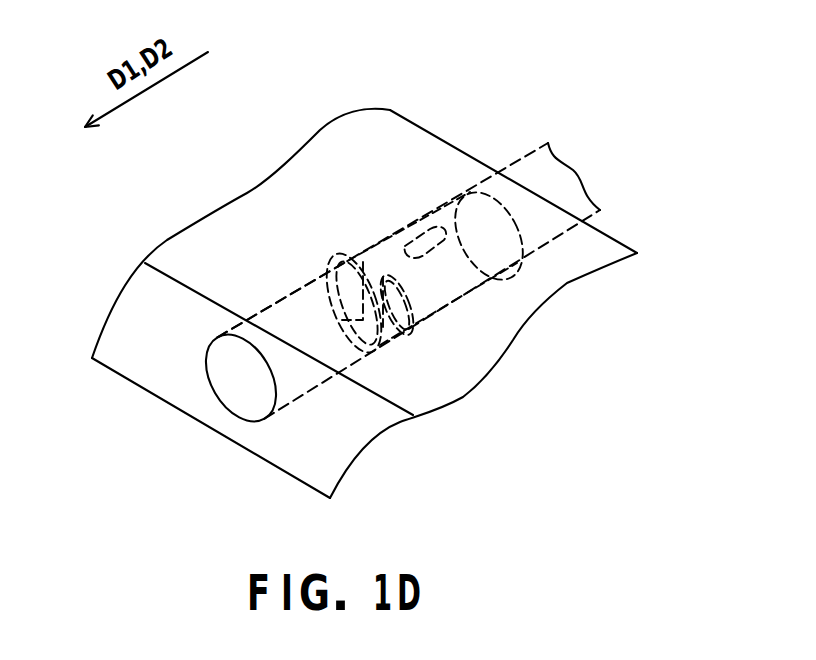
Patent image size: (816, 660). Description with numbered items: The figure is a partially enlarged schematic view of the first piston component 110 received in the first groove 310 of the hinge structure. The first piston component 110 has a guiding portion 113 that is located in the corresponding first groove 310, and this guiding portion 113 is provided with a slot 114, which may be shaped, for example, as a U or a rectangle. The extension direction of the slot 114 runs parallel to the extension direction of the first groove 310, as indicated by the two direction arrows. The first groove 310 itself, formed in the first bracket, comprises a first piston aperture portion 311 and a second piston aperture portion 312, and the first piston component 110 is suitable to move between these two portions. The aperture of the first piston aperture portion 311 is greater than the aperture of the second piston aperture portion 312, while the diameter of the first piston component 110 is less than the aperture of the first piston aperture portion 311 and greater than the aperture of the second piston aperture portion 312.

The first piston component 110 is at (407, 303).
The guiding portion 113 is at (545, 228).
The slot 114 is at (457, 250).
The first groove 310 is at (237, 380).
The first piston aperture portion 311 is at (263, 308).
The second piston aperture portion 312 is at (430, 226).